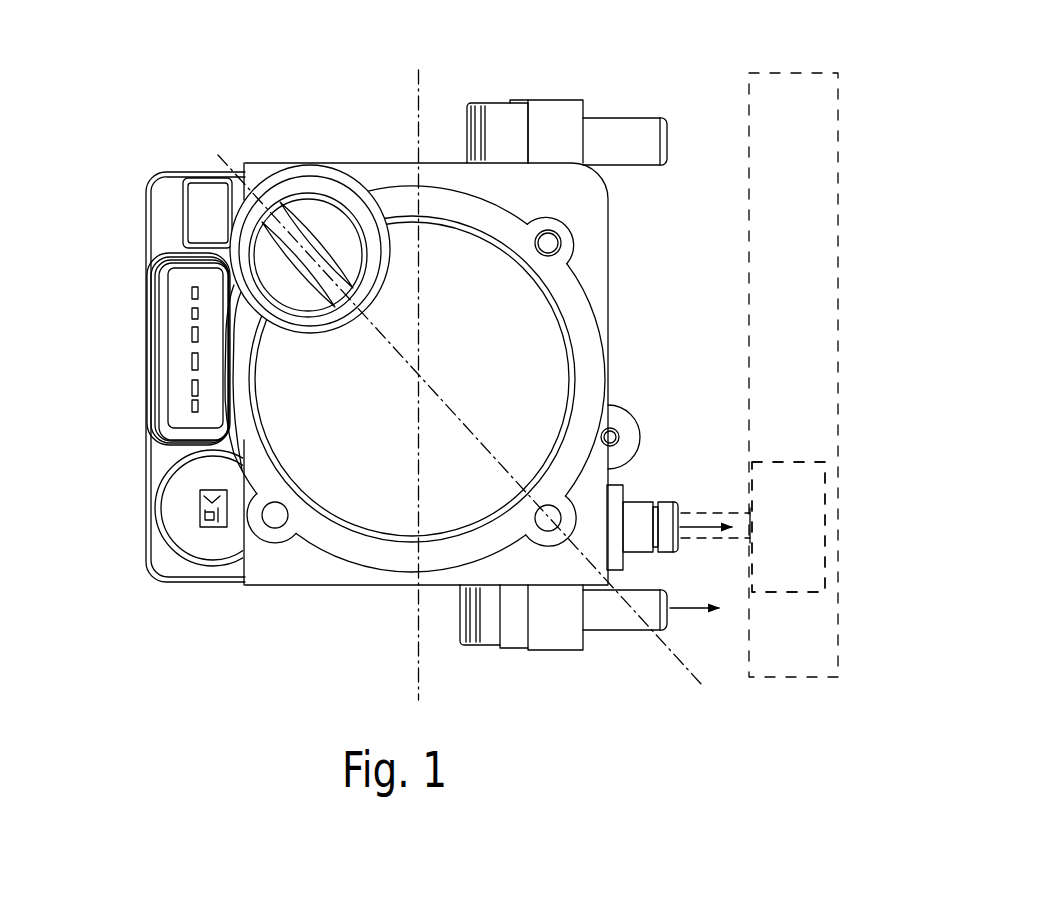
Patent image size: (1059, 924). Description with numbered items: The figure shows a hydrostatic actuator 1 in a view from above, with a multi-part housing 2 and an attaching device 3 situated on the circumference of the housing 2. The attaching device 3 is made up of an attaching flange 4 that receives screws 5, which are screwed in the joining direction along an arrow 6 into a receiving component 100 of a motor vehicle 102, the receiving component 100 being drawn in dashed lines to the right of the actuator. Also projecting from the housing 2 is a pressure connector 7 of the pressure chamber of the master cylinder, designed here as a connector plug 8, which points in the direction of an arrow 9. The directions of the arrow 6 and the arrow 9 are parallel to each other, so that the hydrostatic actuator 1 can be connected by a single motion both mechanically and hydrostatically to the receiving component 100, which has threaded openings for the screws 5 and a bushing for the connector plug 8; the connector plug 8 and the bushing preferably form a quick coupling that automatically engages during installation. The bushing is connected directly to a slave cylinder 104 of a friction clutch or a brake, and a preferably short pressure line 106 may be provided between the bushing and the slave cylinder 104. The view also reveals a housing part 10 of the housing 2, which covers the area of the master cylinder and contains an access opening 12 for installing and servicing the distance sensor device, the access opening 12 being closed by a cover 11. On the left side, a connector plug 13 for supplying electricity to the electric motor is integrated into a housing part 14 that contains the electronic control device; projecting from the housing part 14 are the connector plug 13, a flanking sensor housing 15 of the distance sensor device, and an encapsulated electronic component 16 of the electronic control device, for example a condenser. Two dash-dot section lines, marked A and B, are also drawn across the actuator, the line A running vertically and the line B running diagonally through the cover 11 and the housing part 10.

The hydrostatic actuator 1 is at (661, 72).
The housing 2 is at (351, 157).
The attaching device 3 is at (551, 94).
The attaching flange 4 is at (548, 640).
The screws 5 is at (497, 104).
The arrow 6 is at (695, 607).
The pressure connector 7 is at (651, 481).
The connector plug 8 is at (666, 510).
The arrow 9 is at (703, 525).
The housing part 10 is at (582, 307).
The cover 11 is at (343, 223).
The access opening 12 is at (291, 172).
The connector plug 13 is at (180, 377).
The housing part 14 is at (157, 459).
The sensor housing 15 is at (195, 215).
The electronic component 16 is at (182, 542).
The receiving component 100 is at (757, 677).
The motor vehicle 102 is at (788, 527).
The slave cylinder 104 is at (790, 461).
The pressure line 106 is at (694, 540).
The section line A is at (421, 78).
The section line B is at (208, 142).